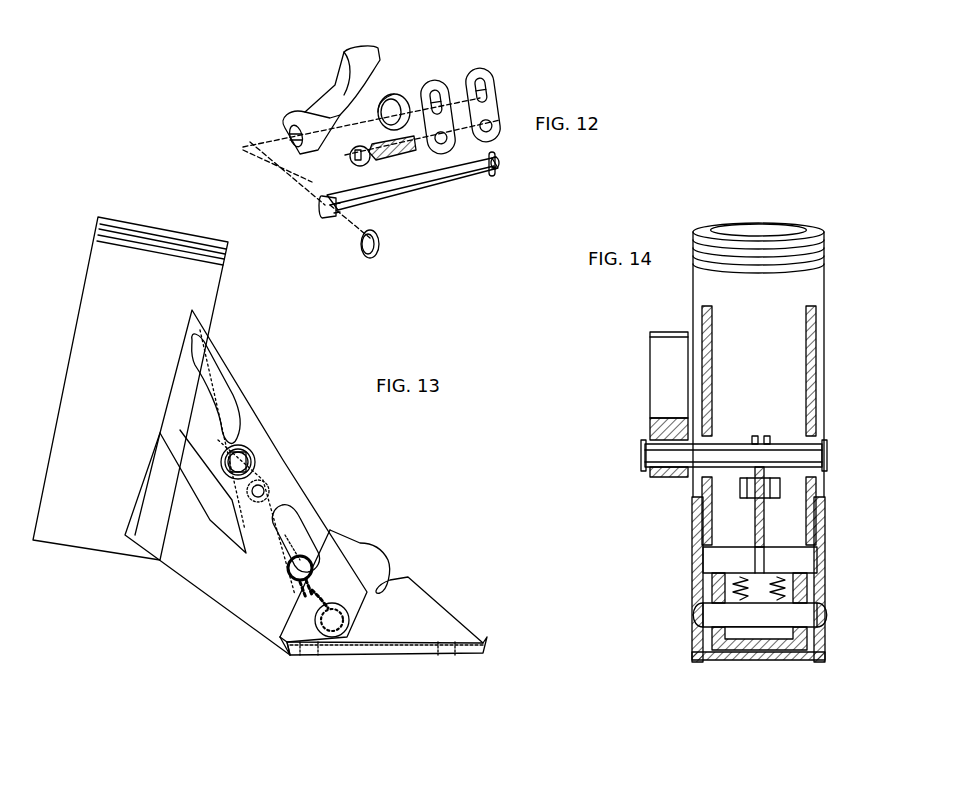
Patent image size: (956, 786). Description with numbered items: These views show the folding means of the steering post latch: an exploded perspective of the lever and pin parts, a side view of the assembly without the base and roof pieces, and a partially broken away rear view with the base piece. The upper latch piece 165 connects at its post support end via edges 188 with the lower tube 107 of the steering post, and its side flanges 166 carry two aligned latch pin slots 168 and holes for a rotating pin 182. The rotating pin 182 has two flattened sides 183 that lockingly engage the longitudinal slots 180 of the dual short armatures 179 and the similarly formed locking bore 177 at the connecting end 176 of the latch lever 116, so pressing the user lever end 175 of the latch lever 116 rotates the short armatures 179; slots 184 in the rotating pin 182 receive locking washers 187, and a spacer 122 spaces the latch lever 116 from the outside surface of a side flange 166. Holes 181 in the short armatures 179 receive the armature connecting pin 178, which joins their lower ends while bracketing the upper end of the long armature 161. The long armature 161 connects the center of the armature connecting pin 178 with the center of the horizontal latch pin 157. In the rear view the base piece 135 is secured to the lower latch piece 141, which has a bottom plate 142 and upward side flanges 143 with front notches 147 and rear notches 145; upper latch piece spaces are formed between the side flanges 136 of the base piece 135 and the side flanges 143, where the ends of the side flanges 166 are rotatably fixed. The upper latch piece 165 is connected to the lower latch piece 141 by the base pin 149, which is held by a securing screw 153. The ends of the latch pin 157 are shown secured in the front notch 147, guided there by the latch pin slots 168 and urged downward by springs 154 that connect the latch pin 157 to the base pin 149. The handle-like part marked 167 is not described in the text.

In FIG. 13, the lower tube 107 is at (134, 222).
In FIG. 14, the lower tube 107 is at (708, 216).
In FIG. 12, the latch lever 116 is at (312, 88).
In FIG. 13, the latch lever 116 is at (226, 386).
In FIG. 14, the latch lever 116 is at (652, 358).
In FIG. 12, the spacer 122 is at (400, 93).
In FIG. 14, the base piece 135 is at (694, 664).
In FIG. 14, the side flanges 136 is at (692, 590).
In FIG. 13, the lower latch piece 141 is at (455, 598).
In FIG. 14, the lower latch piece 141 is at (736, 650).
In FIG. 13, the bottom plate 142 is at (403, 656).
In FIG. 13, the side flanges 143 is at (428, 618).
In FIG. 14, the side flanges 143 is at (802, 590).
In FIG. 13, the rear notches 145 is at (393, 577).
In FIG. 13, the front notches 147 is at (318, 544).
In FIG. 14, the front notches 147 is at (703, 573).
In FIG. 13, the base pin 149 is at (333, 622).
In FIG. 14, the base pin 149 is at (812, 638).
In FIG. 14, the securing screw 153 is at (697, 615).
In FIG. 13, the springs 154 is at (313, 592).
In FIG. 14, the springs 154 is at (742, 600).
In FIG. 13, the latch pin 157 is at (298, 570).
In FIG. 14, the latch pin 157 is at (762, 560).
In FIG. 13, the long armature 161 is at (282, 512).
In FIG. 14, the long armature 161 is at (764, 530).
In FIG. 13, the upper latch piece 165 is at (262, 410).
In FIG. 13, the side flanges 166 is at (209, 509).
In FIG. 14, the side flanges 166 is at (716, 345).
In FIG. 12, the handle 167 is at (197, 9).
In FIG. 13, the latch pin slots 168 is at (268, 532).
In FIG. 14, the latch pin slots 168 is at (706, 542).
In FIG. 12, the user lever end 175 is at (352, 86).
In FIG. 12, the connecting end 176 is at (282, 148).
In FIG. 12, the locking bore 177 is at (292, 136).
In FIG. 12, the armature connecting pin 178 is at (378, 150).
In FIG. 13, the armature connecting pin 178 is at (264, 490).
In FIG. 14, the armature connecting pin 178 is at (780, 500).
In FIG. 12, the short armatures 179 is at (446, 76).
In FIG. 13, the short armatures 179 is at (272, 470).
In FIG. 14, the short armatures 179 is at (767, 434).
In FIG. 12, the longitudinal slots 180 is at (487, 80).
In FIG. 12, the holes 181 is at (490, 130).
In FIG. 12, the rotating pin 182 is at (382, 207).
In FIG. 13, the rotating pin 182 is at (242, 458).
In FIG. 14, the rotating pin 182 is at (796, 450).
In FIG. 12, the flattened sides 183 is at (433, 188).
In FIG. 12, the slots 184 is at (326, 192).
In FIG. 12, the locking washers 187 is at (382, 248).
In FIG. 14, the locking washers 187 is at (645, 446).
In FIG. 13, the edges 188 is at (165, 425).